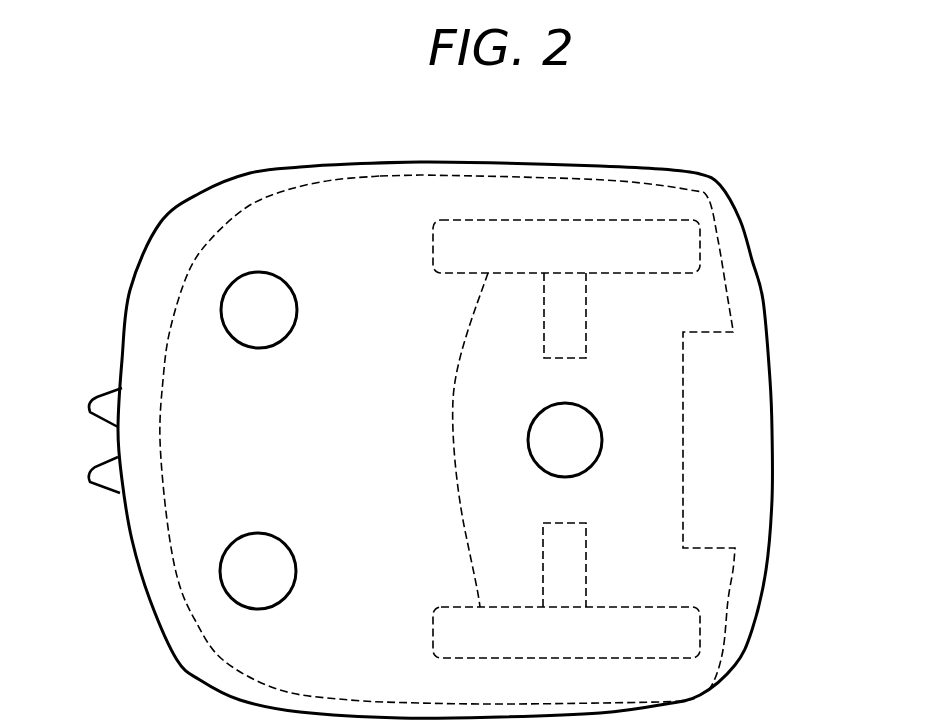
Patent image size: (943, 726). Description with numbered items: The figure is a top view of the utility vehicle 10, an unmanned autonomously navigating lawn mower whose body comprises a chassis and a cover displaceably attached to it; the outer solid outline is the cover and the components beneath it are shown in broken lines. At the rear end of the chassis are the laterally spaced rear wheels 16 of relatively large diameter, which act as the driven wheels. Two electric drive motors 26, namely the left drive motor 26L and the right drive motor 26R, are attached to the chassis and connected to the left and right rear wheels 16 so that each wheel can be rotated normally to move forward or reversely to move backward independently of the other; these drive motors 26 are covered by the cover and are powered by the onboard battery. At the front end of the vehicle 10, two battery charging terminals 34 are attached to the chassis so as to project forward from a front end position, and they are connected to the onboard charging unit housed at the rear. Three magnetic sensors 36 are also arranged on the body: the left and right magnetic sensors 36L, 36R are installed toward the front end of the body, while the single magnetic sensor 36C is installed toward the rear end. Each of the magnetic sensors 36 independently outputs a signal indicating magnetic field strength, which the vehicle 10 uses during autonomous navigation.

The utility vehicle 10 is at (703, 156).
The rear wheels 16 is at (464, 440).
The drive motors 26 is at (663, 439).
The right drive motor 26R is at (586, 301).
The left drive motor 26L is at (586, 547).
The battery charging terminals 34 is at (87, 402).
The magnetic sensors 36 is at (244, 440).
The right magnetic sensor 36R is at (258, 348).
The left magnetic sensor 36L is at (258, 533).
The magnetic sensor 36C is at (596, 424).